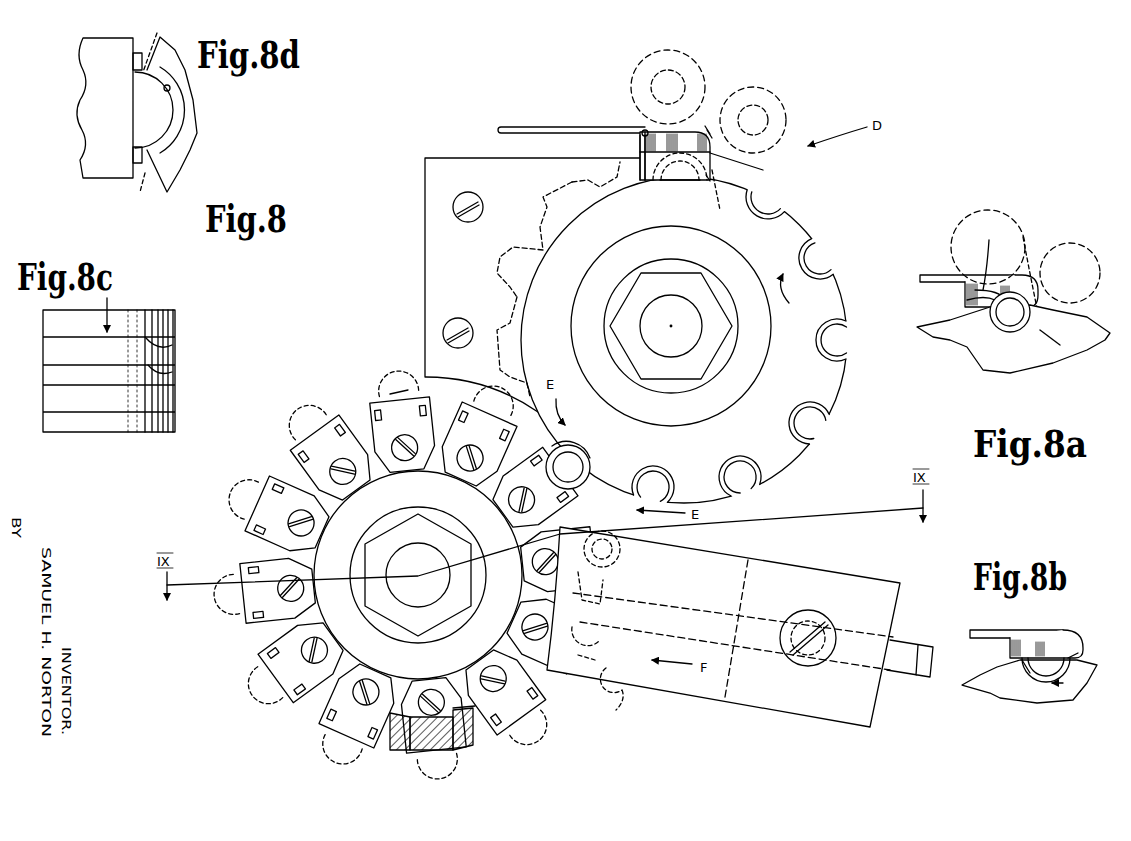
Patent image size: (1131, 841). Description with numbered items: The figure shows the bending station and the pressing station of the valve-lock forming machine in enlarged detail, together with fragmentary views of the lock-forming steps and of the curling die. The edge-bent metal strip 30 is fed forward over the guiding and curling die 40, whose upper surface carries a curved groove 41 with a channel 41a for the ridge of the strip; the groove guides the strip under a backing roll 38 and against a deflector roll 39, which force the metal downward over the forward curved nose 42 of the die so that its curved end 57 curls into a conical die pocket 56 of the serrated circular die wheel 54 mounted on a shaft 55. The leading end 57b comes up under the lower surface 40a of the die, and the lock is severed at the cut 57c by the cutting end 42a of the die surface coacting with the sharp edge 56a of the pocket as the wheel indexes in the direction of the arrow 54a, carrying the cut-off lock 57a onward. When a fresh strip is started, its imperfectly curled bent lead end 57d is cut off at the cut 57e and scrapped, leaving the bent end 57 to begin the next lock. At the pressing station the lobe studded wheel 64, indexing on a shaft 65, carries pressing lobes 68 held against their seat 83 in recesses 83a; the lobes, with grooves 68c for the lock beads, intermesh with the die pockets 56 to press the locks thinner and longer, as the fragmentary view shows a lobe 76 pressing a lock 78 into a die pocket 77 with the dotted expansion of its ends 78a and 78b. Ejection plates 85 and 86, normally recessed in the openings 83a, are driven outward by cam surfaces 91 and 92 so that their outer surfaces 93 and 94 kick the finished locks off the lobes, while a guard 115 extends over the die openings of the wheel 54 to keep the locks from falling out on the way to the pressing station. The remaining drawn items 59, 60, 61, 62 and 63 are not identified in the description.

In FIG. 8, the strip of metal 30 is at (500, 128).
In FIG. 8a, the strip of metal 30 is at (935, 275).
In FIG. 8b, the strip of metal 30 is at (980, 632).
In FIG. 8, the backing roll 38 is at (702, 62).
In FIG. 8a, the backing roll 38 is at (1043, 233).
In FIG. 8, the deflector roll 39 is at (777, 105).
In FIG. 8a, the deflector roll 39 is at (1082, 248).
In FIG. 8, the guiding and curling die 40 is at (643, 130).
In FIG. 8a, the guiding and curling die 40 is at (988, 248).
In FIG. 8c, the guiding and curling die 40 is at (135, 325).
In FIG. 8, the lower surface of guide die 40a is at (648, 150).
In FIG. 8, the curved groove 41 is at (642, 140).
In FIG. 8c, the curved groove 41 is at (170, 345).
In FIG. 8c, the channel 41a is at (173, 370).
In FIG. 8, the forward curved nose 42 is at (725, 140).
In FIG. 8c, the forward curved nose 42 is at (160, 405).
In FIG. 8, the cutting end 42a is at (713, 140).
In FIG. 8b, the cutting end 42a is at (1078, 653).
In FIG. 8c, the cutting end 42a is at (168, 383).
In FIG. 8, the serrated circular die wheel 54 is at (830, 310).
In FIG. 8a, the serrated circular die wheel 54 is at (1092, 340).
In FIG. 8b, the serrated circular die wheel 54 is at (1029, 681).
In FIG. 8, the arrow 54a is at (794, 310).
In FIG. 8, the shaft 55 is at (695, 347).
In FIG. 8, the die pockets 56 is at (840, 263).
In FIG. 8a, the die pockets 56 is at (1010, 323).
In FIG. 8b, the die pockets 56 is at (1050, 683).
In FIG. 8b, the sharp edge of die pocket 56a is at (1077, 660).
In FIG. 8, the curved end of metal strip 57 is at (735, 157).
In FIG. 8a, the curved end of metal strip 57 is at (1037, 297).
In FIG. 8b, the curved end of metal strip 57 is at (1070, 640).
In FIG. 8, the cut-off lock 57a is at (726, 195).
In FIG. 8b, the cut-off lock 57a is at (1030, 673).
In FIG. 8, the leading end 57b is at (672, 182).
In FIG. 8, the cut 57c is at (721, 183).
In FIG. 8a, the bent lead end 57d is at (967, 300).
In FIG. 8a, the cut-off point 57e is at (1054, 345).
In FIG. 8, the pivot 59 is at (707, 130).
In FIG. 8, the pawl 60 is at (545, 190).
In FIG. 8, the pawl arm 61 is at (510, 255).
In FIG. 8, the pawl link 62 is at (495, 292).
In FIG. 8, the pawl tail 63 is at (530, 350).
In FIG. 8, the lobe studded wheel 64 is at (403, 557).
In FIG. 8, the shaft 65 is at (442, 597).
In FIG. 8, the pressing lobes 68 is at (398, 370).
In FIG. 8, the grooves 68c is at (395, 385).
In FIG. 8, the lobes 76 is at (577, 481).
In FIG. 8d, the lobes 76 is at (167, 88).
In FIG. 8, the die pockets 77 is at (590, 465).
In FIG. 8d, the die pockets 77 is at (200, 133).
In FIG. 8, the lock 78 is at (578, 450).
In FIG. 8d, the lock 78 is at (178, 113).
In FIG. 8d, the end of lock 78a is at (142, 193).
In FIG. 8d, the end of lock 78b is at (158, 44).
In FIG. 8, the seat 83 is at (458, 690).
In FIG. 8, the recesses 83a is at (490, 712).
In FIG. 8, the ejection plate 85 is at (395, 748).
In FIG. 8, the ejection plate 86 is at (455, 730).
In FIG. 8, the cam surface 91 is at (623, 565).
In FIG. 8, the cam surface 92 is at (622, 605).
In FIG. 8, the outer surface 93 is at (415, 750).
In FIG. 8, the outer surface 94 is at (468, 748).
In FIG. 8, the guard 115 is at (428, 245).